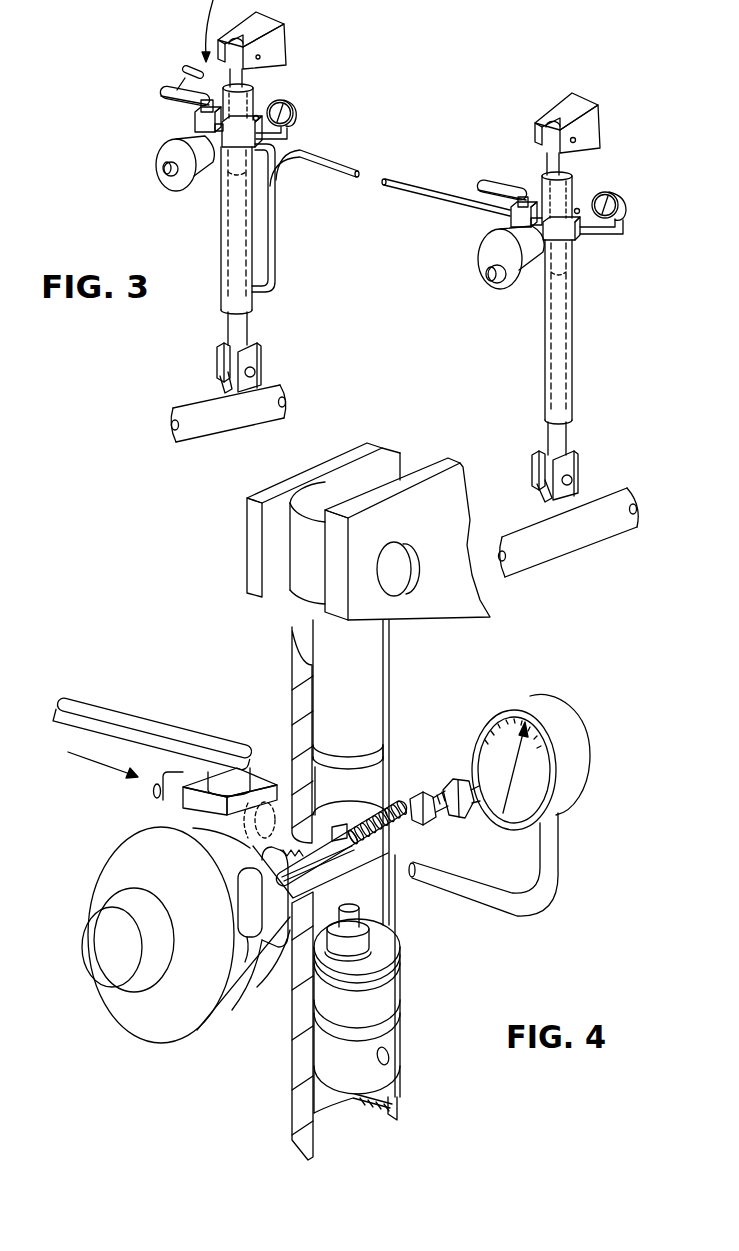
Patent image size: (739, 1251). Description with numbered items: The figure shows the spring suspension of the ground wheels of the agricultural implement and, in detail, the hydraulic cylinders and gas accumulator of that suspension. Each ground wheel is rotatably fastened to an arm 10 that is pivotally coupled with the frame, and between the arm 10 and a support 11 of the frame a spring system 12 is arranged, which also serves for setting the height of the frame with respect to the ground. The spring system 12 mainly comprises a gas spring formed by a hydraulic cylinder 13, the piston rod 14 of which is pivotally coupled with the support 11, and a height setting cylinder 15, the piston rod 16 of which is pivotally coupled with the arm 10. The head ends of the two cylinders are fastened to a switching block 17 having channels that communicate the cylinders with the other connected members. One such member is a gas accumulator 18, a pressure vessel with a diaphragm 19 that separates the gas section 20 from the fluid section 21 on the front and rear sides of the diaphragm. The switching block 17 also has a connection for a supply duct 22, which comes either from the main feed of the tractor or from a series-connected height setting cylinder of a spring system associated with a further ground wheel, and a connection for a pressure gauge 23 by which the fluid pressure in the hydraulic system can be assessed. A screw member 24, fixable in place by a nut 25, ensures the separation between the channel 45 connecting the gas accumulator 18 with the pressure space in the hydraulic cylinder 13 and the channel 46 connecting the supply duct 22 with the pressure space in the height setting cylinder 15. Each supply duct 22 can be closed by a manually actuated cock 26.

In FIG. 3, the arm 10 is at (274, 393).
In FIG. 3, the support 11 is at (276, 40).
In FIG. 4, the support 11 is at (422, 612).
In FIG. 3, the spring system 12 is at (581, 287).
In FIG. 3, the hydraulic cylinder 13 is at (255, 94).
In FIG. 4, the hydraulic cylinder 13 is at (308, 714).
In FIG. 3, the piston rod 14 is at (250, 70).
In FIG. 4, the piston rod 14 is at (312, 622).
In FIG. 3, the height setting cylinder 15 is at (221, 235).
In FIG. 4, the height setting cylinder 15 is at (297, 1082).
In FIG. 3, the piston rod 16 is at (246, 335).
In FIG. 3, the switching block 17 is at (270, 178).
In FIG. 4, the switching block 17 is at (412, 860).
In FIG. 3, the gas accumulator 18 is at (176, 187).
In FIG. 4, the gas accumulator 18 is at (130, 1042).
In FIG. 4, the diaphragm 19 is at (235, 1010).
In FIG. 4, the gas section 20 is at (190, 1012).
In FIG. 4, the fluid section 21 is at (260, 990).
In FIG. 3, the supply duct 22 is at (163, 102).
In FIG. 4, the supply duct 22 is at (167, 802).
In FIG. 3, the pressure gauge 23 is at (297, 113).
In FIG. 4, the pressure gauge 23 is at (577, 777).
In FIG. 3, the screw member 24 is at (290, 105).
In FIG. 4, the screw member 24 is at (458, 777).
In FIG. 4, the nut 25 is at (420, 797).
In FIG. 3, the cock 26 is at (196, 127).
In FIG. 4, the cock 26 is at (216, 791).
In FIG. 4, the channel 45 is at (343, 908).
In FIG. 4, the channel 46 is at (345, 878).